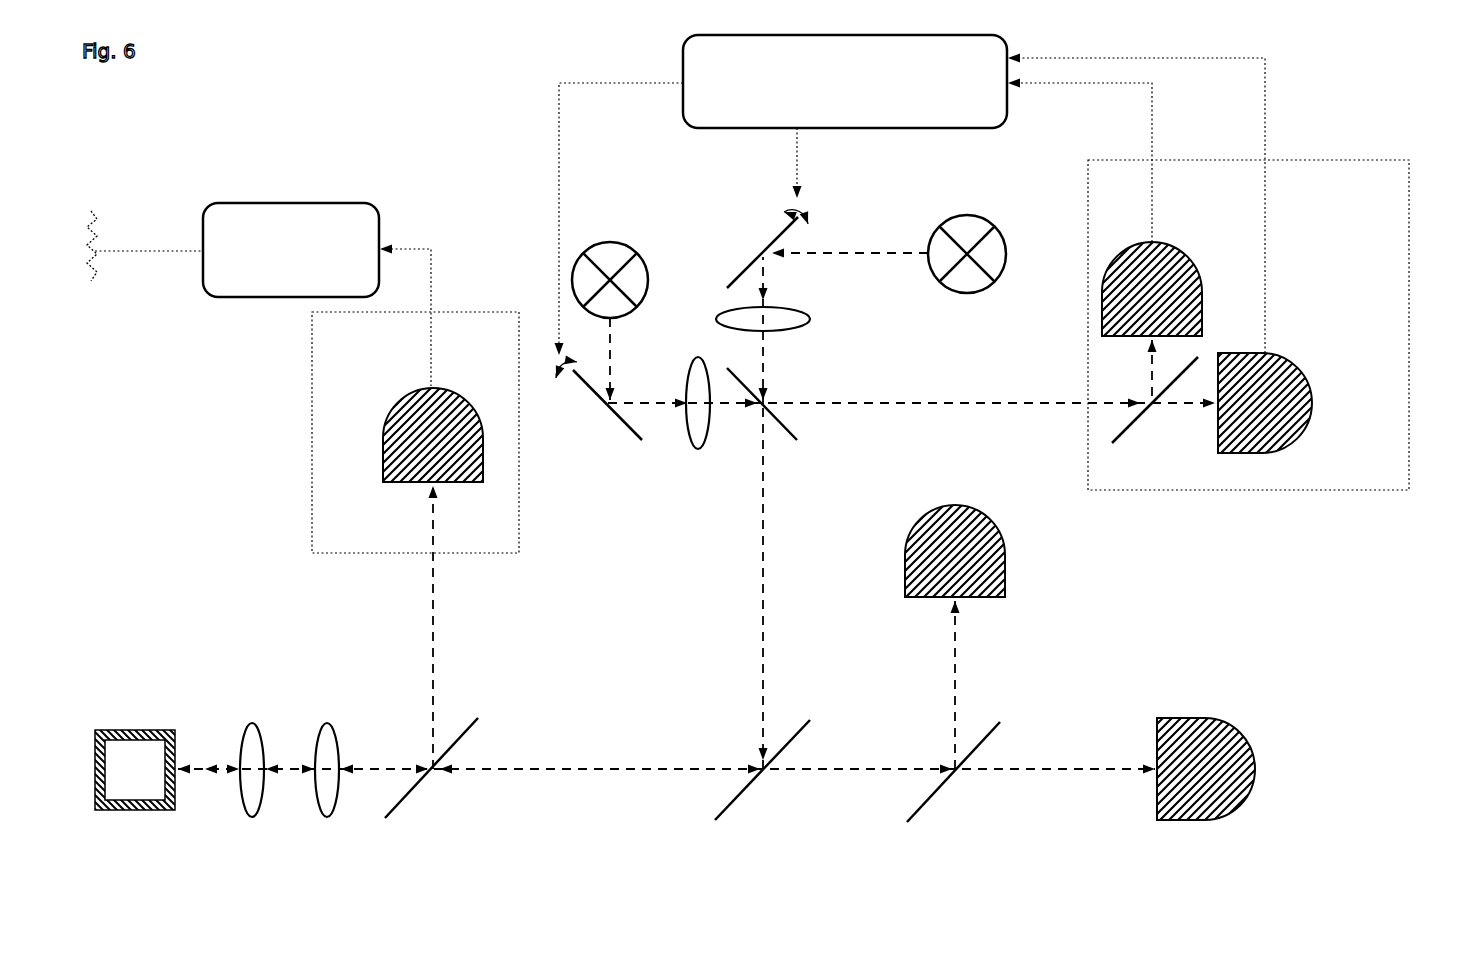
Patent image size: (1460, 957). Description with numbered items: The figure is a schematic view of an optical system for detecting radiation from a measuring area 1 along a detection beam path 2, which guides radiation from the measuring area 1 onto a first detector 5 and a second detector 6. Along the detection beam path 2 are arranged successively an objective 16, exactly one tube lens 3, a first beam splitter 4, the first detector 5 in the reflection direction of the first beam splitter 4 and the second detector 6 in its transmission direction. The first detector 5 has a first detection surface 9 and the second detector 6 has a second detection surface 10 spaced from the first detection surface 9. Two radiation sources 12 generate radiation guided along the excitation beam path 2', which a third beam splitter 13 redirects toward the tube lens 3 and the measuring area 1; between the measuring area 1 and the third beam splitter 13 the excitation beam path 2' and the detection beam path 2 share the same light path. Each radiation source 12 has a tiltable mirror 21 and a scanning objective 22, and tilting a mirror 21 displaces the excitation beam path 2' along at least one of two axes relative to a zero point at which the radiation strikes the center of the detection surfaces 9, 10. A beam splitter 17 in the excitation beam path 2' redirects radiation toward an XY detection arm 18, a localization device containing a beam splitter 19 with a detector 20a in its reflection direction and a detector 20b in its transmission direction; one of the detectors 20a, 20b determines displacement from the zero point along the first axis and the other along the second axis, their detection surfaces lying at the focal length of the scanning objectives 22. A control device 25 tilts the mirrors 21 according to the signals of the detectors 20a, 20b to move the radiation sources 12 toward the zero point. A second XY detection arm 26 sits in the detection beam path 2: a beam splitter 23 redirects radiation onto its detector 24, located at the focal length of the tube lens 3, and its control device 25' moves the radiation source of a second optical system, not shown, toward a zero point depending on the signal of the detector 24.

The measuring area 1 is at (133, 725).
The detection beam path 2 is at (666, 591).
The excitation beam path 2' is at (911, 394).
The tube lens 3 is at (328, 821).
The first beam splitter 4 is at (915, 806).
The first detector 5 is at (1003, 516).
The second detector 6 is at (1181, 714).
The first detection surface 9 is at (985, 606).
The second detection surface 10 is at (1154, 795).
The radiation source 12 is at (639, 244).
The third beam splitter 13 is at (719, 806).
The objective 16 is at (254, 821).
The beam splitter 17 is at (781, 435).
The XY detection arm 18 is at (1418, 415).
The beam splitter 19 is at (1135, 427).
The detector 20a is at (1193, 257).
The detector 20b is at (1306, 371).
The tiltable mirror 21 is at (618, 423).
The scanning objective 22 is at (690, 448).
The beam splitter 23 is at (415, 793).
The detector 24 is at (395, 394).
The control device 25 is at (910, 195).
The control device 25' is at (259, 294).
The second XY detection arm 26 is at (528, 541).